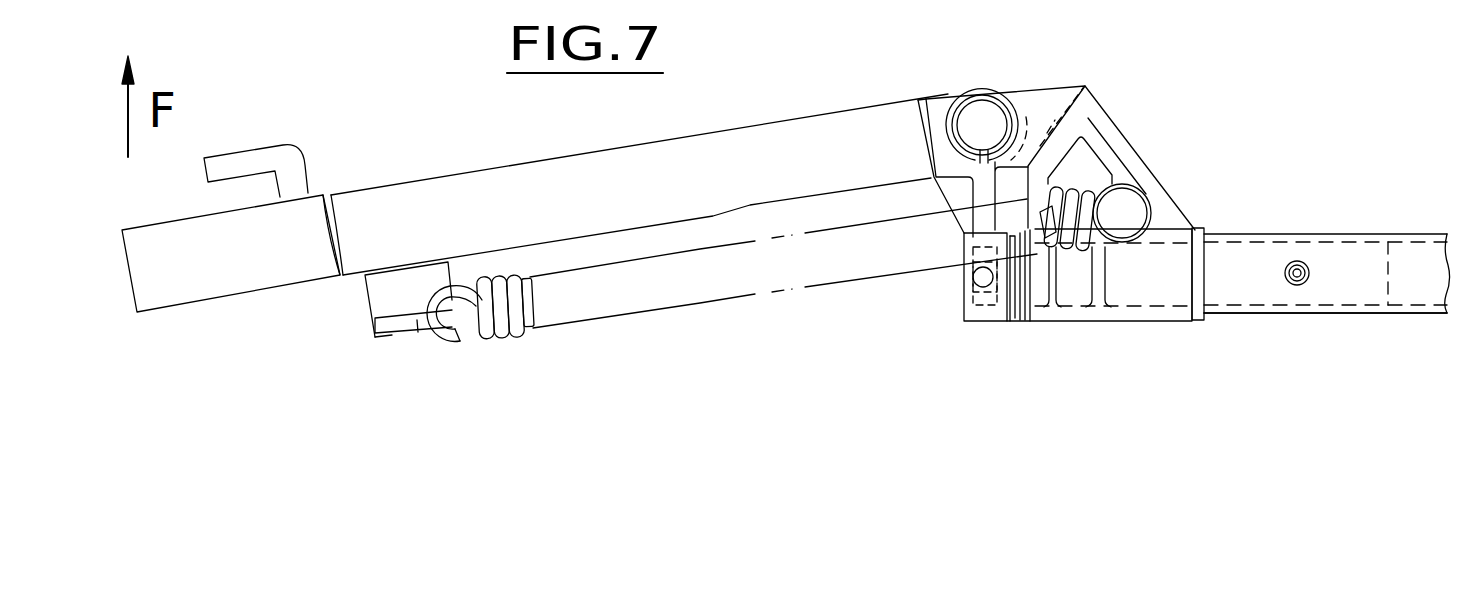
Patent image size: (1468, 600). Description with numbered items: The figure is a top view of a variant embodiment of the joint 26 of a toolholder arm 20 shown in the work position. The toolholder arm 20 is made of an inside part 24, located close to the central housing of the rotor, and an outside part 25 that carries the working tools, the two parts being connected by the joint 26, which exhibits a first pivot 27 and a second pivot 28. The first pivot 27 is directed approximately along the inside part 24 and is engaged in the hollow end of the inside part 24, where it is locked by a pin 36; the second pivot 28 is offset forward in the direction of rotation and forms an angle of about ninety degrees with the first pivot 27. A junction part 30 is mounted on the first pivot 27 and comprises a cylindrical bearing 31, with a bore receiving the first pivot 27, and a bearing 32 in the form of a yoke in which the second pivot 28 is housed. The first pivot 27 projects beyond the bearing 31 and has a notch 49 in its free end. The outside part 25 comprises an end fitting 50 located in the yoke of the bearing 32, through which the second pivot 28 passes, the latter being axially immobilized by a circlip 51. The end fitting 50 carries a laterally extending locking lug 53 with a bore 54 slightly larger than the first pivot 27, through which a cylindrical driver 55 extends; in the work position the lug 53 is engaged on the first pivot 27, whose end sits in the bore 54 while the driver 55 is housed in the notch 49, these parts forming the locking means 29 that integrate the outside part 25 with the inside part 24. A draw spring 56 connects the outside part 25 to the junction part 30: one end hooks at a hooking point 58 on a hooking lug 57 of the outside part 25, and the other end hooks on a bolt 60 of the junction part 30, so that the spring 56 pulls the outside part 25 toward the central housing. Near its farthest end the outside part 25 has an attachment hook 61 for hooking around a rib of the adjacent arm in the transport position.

The toolholder arm 20 is at (1322, 320).
The inside part 24 is at (1410, 233).
The outside part 25 is at (452, 197).
The joint 26 is at (1113, 110).
The first pivot 27 is at (1257, 257).
The second pivot 28 is at (985, 125).
The locking means 29 is at (1005, 322).
The junction part 30 is at (1128, 157).
The cylindrical bearing 31 is at (1110, 315).
The yoke bearing 32 is at (955, 98).
The pin 36 is at (1302, 267).
The notch 49 is at (990, 312).
The end fitting 50 is at (928, 105).
The circlip 51 is at (988, 100).
The locking lug 53 is at (965, 232).
The bore 54 is at (963, 305).
The driver 55 is at (975, 280).
The draw spring 56 is at (512, 337).
The hooking lug 57 is at (385, 295).
The hooking point 58 is at (422, 340).
The bolt 60 is at (1128, 210).
The attachment hook 61 is at (247, 160).